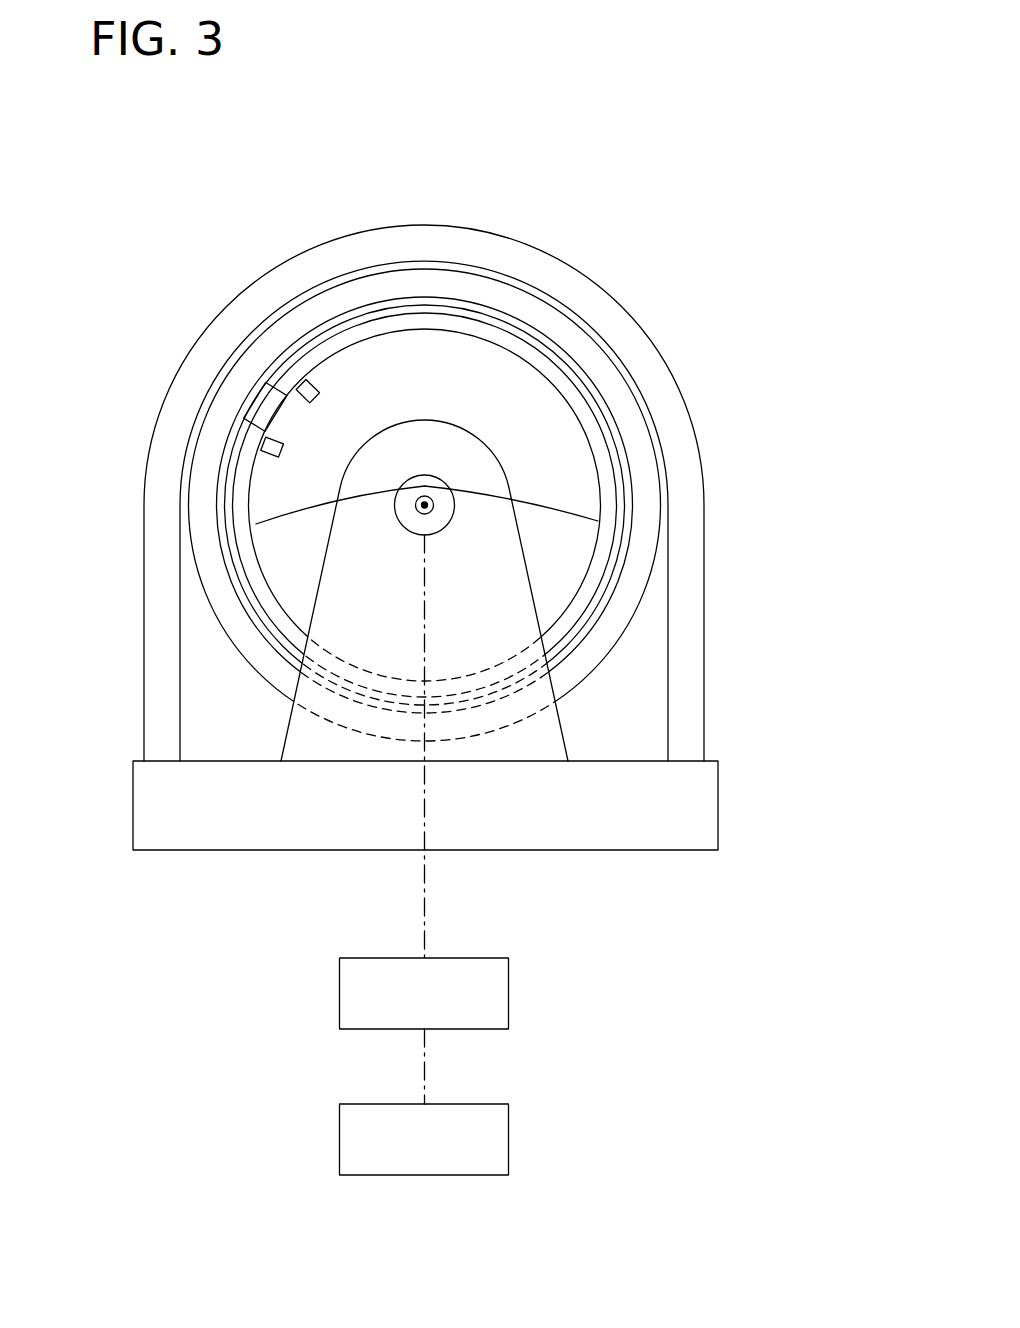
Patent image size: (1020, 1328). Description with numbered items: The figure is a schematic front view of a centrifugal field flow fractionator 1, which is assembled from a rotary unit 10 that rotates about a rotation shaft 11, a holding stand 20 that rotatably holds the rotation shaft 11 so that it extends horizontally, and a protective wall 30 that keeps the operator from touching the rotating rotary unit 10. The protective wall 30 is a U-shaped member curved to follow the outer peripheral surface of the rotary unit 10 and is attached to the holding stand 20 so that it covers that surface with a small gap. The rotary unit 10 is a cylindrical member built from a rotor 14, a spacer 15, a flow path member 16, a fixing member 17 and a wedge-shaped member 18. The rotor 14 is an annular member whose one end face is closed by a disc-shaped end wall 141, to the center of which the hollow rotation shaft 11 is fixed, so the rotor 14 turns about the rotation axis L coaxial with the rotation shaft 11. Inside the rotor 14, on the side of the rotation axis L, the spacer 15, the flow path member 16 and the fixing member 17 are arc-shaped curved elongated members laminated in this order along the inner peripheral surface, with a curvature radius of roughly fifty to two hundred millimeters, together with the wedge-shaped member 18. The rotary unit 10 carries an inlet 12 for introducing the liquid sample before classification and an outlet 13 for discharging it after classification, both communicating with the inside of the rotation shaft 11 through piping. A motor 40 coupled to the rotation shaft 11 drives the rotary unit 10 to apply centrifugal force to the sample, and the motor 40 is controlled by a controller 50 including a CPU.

The centrifugal field flow fractionator 1 is at (515, 190).
The rotary unit 10 is at (486, 430).
The rotation shaft 11 is at (598, 521).
The inlet 12 is at (262, 448).
The outlet 13 is at (302, 380).
The rotor 14 is at (647, 440).
The end wall 141 is at (465, 353).
The spacer 15 is at (607, 407).
The flow path member 16 is at (583, 383).
The fixing member 17 is at (538, 357).
The wedge-shaped member 18 is at (257, 408).
The holding stand 20 is at (665, 850).
The protective wall 30 is at (697, 663).
The motor 40 is at (339, 993).
The controller 50 is at (339, 1140).
The rotation axis L is at (256, 524).